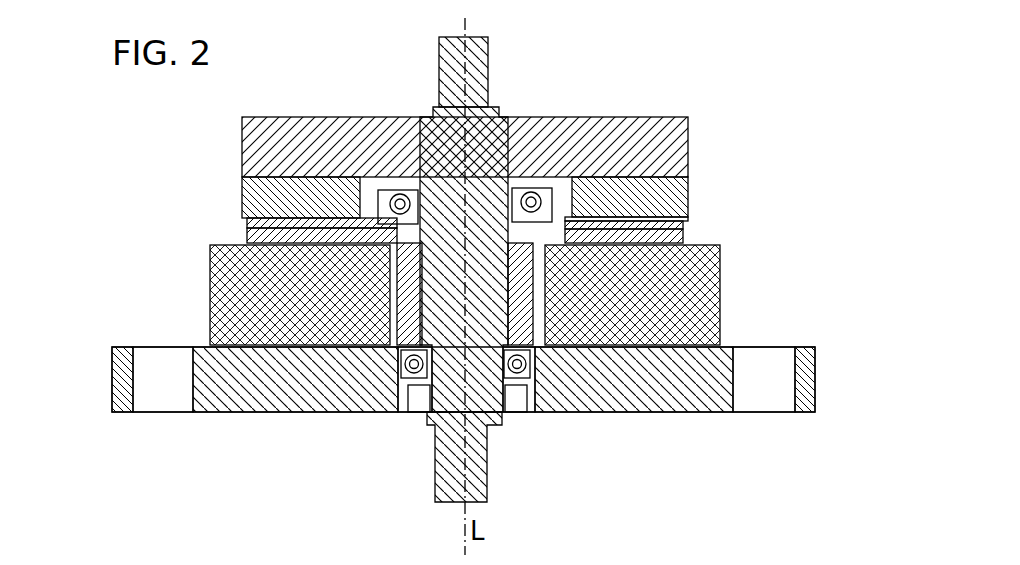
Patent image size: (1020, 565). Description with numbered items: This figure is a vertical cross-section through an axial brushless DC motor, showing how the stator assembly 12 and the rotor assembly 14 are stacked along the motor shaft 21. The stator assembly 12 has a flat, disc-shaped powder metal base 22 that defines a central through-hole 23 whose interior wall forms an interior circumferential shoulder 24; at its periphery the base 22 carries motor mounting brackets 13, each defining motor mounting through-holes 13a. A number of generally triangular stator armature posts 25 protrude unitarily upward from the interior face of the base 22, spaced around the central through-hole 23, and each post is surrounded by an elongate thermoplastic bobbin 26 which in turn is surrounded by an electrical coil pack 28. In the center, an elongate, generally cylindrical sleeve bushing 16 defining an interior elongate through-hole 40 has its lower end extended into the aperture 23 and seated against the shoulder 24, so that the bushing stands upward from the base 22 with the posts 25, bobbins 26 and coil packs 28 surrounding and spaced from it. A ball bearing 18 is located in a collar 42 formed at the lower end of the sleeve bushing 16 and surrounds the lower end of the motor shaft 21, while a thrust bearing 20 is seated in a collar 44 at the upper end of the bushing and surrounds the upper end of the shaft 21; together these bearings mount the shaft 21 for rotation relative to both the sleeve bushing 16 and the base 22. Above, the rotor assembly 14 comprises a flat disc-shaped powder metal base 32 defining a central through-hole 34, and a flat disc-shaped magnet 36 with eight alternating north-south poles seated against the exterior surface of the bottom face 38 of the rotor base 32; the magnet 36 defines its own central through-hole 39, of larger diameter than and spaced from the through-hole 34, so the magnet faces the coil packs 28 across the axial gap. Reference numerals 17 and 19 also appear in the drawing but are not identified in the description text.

The stator assembly 12 is at (236, 416).
The motor mounting bracket 13 is at (117, 368).
The motor mounting through-hole 13a is at (130, 393).
The rotor assembly 14 is at (579, 112).
The sleeve bushing 16 is at (396, 283).
The upper bearing 17 is at (520, 160).
The ball bearing 18 is at (411, 414).
The shaft lower end 19 is at (496, 426).
The thrust bearing 20 is at (399, 190).
The motor shaft 21 is at (481, 128).
The base 22 is at (640, 383).
The central through-hole 23 is at (395, 402).
The interior circumferential shoulder 24 is at (541, 378).
The stator armature post 25 is at (245, 238).
The bobbin 26 is at (208, 249).
The electrical coil pack 28 is at (250, 287).
The base 32 is at (690, 122).
The central through-hole 34 is at (433, 113).
The magnet 36 is at (690, 194).
The bottom face 38 is at (242, 193).
The central through-hole 39 is at (600, 160).
The interior elongate through-hole 40 is at (247, 222).
The collar 42 is at (560, 372).
The collar 44 is at (690, 175).